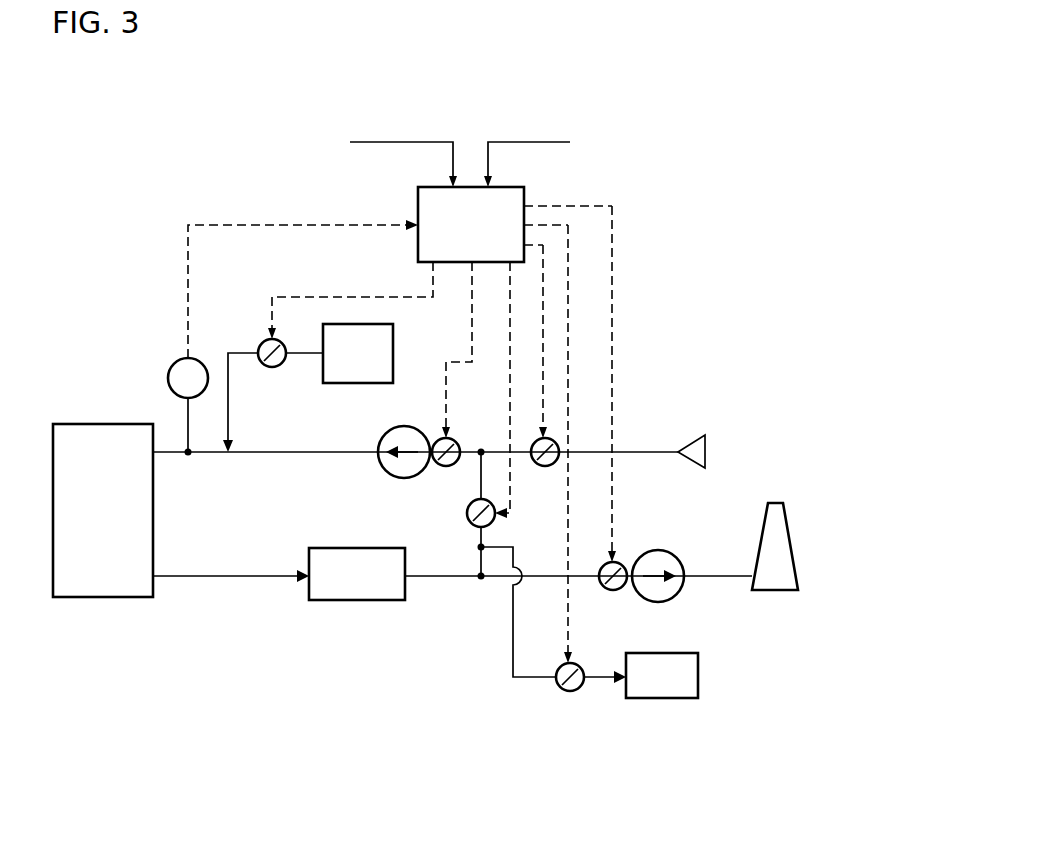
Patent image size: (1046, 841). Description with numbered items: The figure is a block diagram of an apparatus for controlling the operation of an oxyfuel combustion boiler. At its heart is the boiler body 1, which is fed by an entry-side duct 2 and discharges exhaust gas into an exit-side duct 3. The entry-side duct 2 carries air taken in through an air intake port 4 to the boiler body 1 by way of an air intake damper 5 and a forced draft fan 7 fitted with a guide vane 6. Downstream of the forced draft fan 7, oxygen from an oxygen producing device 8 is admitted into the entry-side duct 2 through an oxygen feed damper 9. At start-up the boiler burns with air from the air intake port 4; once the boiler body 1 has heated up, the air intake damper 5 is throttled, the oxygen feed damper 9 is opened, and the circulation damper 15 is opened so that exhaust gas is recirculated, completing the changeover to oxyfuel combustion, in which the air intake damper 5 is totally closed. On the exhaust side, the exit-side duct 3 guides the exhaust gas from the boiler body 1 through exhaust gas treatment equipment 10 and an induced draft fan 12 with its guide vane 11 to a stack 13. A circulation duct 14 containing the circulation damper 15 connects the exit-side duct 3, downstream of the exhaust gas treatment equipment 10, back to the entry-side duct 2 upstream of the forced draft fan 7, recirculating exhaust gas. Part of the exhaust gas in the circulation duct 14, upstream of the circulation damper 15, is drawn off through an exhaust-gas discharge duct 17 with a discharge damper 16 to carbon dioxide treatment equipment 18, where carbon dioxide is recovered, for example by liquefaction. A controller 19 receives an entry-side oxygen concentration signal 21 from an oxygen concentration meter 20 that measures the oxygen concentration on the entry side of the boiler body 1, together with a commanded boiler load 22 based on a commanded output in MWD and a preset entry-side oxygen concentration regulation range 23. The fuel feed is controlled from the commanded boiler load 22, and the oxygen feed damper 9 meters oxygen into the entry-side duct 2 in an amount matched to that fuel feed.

The boiler body 1 is at (99, 598).
The entry-side duct 2 is at (289, 452).
The exit-side duct 3 is at (232, 576).
The air intake port 4 is at (695, 435).
The air intake damper 5 is at (547, 466).
The guide vane 6 is at (456, 441).
The forced draft fan 7 is at (381, 437).
The oxygen producing device 8 is at (394, 346).
The oxygen feed damper 9 is at (262, 343).
The exhaust gas treatment equipment 10 is at (352, 600).
The guide vane 11 is at (614, 590).
The induced draft fan 12 is at (672, 597).
The stack 13 is at (775, 591).
The circulation duct 14 is at (478, 532).
The circulation damper 15 is at (494, 523).
The discharge damper 16 is at (572, 692).
The exhaust-gas discharge duct 17 is at (529, 678).
The carbon dioxide treatment equipment 18 is at (658, 699).
The controller 19 is at (417, 202).
The oxygen concentration meter 20 is at (168, 373).
The entry-side oxygen concentration signal 21 is at (186, 247).
The commanded boiler load 22 is at (557, 141).
The entry-side oxygen concentration regulation range 23 is at (381, 141).